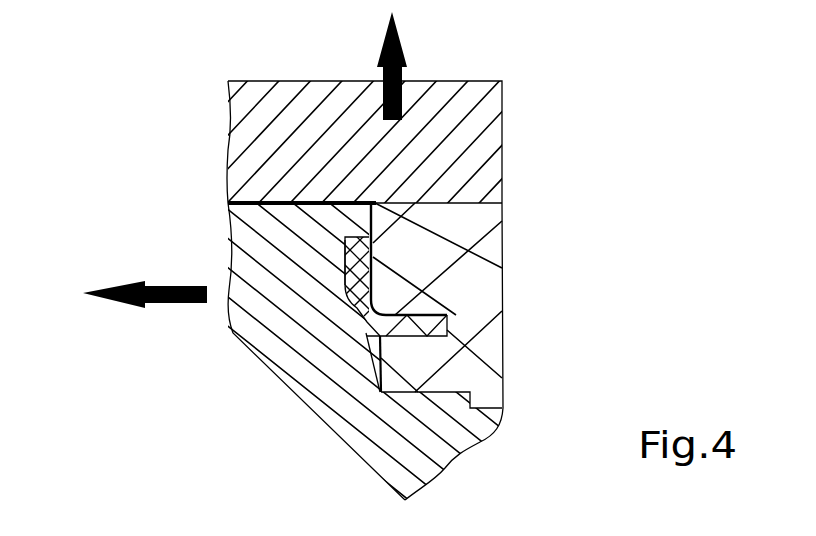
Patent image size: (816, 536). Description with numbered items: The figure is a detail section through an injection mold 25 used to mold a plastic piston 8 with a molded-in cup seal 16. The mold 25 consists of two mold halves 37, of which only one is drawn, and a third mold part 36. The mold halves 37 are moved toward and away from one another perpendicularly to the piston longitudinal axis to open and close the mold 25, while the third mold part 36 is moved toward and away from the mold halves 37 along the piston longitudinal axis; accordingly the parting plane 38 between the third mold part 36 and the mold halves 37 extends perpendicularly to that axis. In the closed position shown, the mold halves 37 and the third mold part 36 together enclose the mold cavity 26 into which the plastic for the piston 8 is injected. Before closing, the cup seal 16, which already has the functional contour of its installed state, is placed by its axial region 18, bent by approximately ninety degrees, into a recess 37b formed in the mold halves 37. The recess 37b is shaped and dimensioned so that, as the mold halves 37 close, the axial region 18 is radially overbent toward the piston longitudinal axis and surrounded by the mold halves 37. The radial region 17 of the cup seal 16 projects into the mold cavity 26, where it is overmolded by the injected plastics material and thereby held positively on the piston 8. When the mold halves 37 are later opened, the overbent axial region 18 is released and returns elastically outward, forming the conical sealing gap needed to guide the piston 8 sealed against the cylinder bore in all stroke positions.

The piston 8 is at (482, 350).
The cup seal 16 is at (347, 323).
The radial region 17 is at (428, 312).
The axial region 18 is at (345, 253).
The mold 25 is at (468, 62).
The mold cavity 26 is at (465, 207).
The third mold part 36 is at (485, 142).
The mold half 37 is at (333, 427).
The recess 37b is at (345, 273).
The parting plane 38 is at (248, 200).